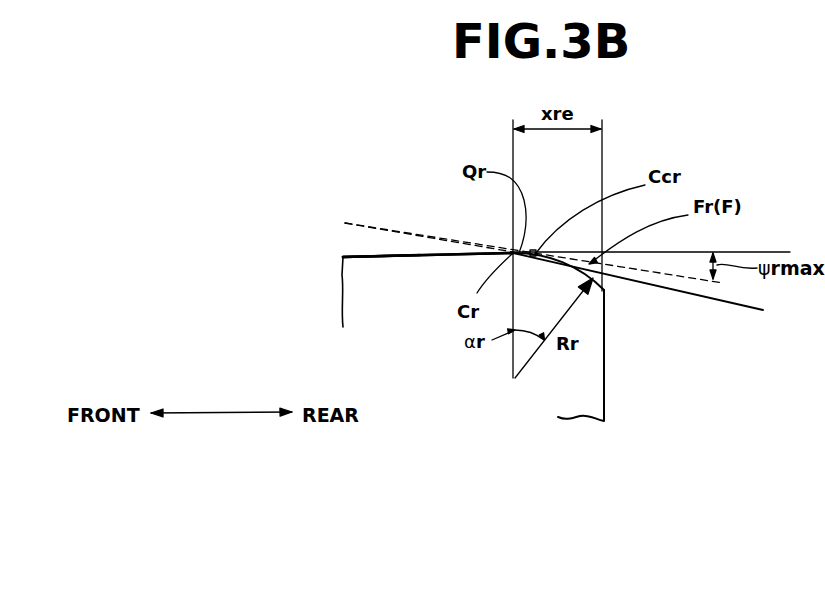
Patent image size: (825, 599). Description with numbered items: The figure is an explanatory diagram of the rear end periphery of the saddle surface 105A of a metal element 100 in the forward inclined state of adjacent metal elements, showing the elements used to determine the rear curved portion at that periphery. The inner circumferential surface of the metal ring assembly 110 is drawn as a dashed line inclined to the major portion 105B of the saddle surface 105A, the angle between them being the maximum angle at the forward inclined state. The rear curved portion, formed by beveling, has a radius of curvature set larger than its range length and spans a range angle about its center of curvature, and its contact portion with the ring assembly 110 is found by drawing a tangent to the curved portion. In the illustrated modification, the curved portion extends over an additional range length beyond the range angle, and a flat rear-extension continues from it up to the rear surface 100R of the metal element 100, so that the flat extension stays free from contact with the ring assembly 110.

The metal element 100 is at (350, 298).
The saddle surface 105A is at (360, 245).
The major portion of saddle surface 105B is at (411, 252).
The metal ring assembly 110 is at (370, 226).
The rear surface of metal element 100R is at (607, 365).